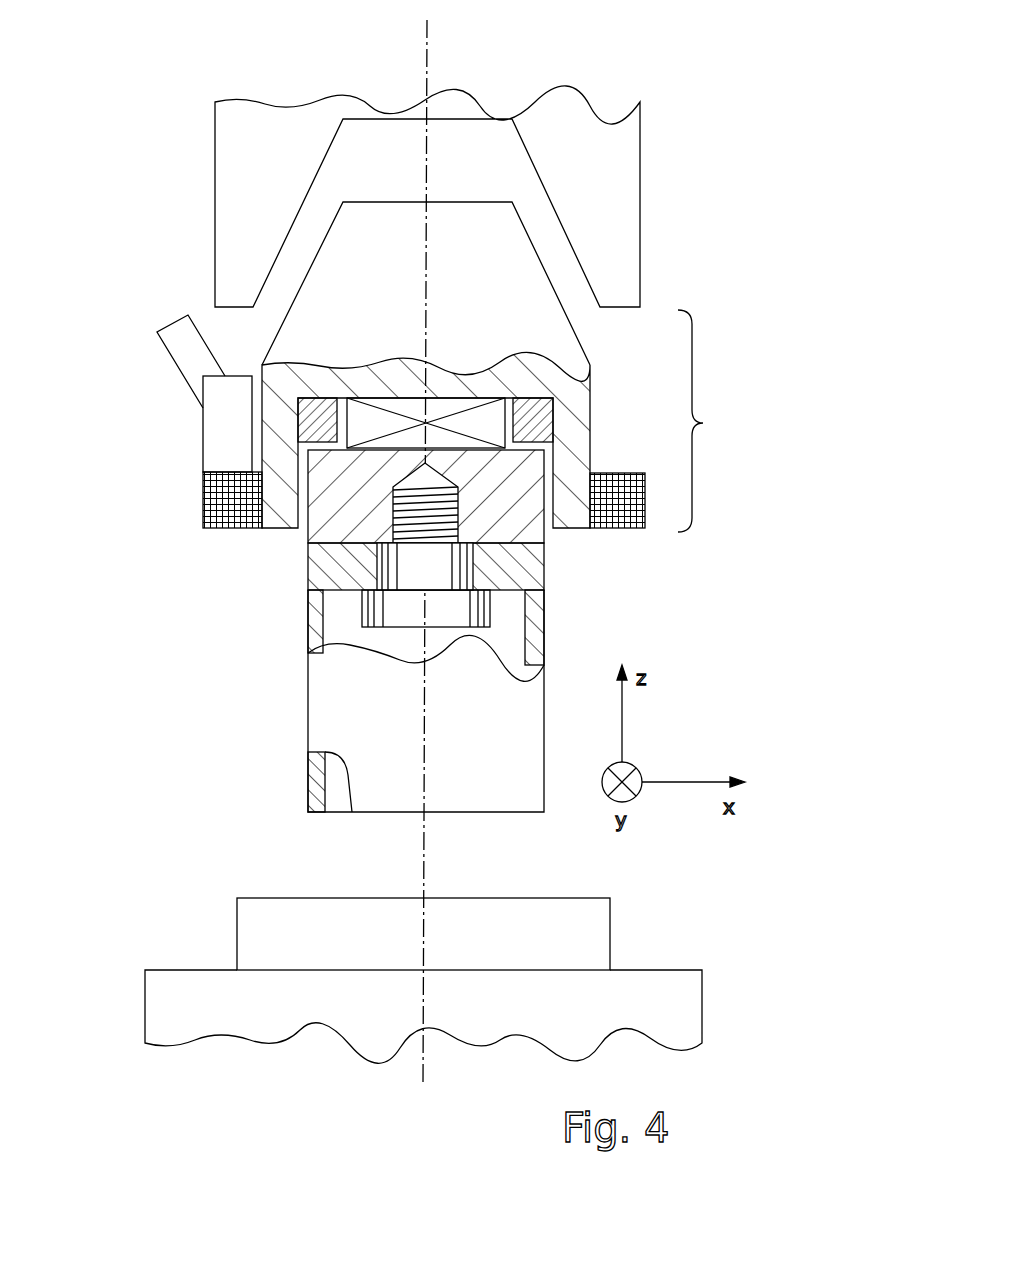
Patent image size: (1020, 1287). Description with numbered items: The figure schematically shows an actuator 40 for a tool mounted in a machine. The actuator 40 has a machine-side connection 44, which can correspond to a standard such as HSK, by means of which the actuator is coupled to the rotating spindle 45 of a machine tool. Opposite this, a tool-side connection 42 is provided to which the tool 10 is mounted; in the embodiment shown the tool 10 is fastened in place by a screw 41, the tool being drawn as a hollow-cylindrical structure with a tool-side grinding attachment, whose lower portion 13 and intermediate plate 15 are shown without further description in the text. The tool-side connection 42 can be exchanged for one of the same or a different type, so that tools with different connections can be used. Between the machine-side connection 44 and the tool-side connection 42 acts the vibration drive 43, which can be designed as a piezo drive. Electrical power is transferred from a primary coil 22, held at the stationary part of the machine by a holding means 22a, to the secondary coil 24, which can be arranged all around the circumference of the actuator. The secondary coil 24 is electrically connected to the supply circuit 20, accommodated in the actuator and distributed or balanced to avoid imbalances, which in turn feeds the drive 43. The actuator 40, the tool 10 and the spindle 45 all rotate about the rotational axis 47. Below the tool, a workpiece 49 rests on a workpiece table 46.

The tool 10 is at (265, 692).
The housing bottom section 13 is at (317, 812).
The plate 15 is at (322, 565).
The supply circuit 20 is at (487, 417).
The primary coil 22 is at (215, 443).
The holding means 22a is at (187, 357).
The secondary coil 24 is at (205, 508).
The actuator 40 is at (710, 421).
The screw 41 is at (363, 604).
The tool-side connection 42 is at (527, 478).
The vibration drive 43 is at (553, 399).
The machine-side connection 44 is at (548, 343).
The spindle 45 is at (630, 238).
The workpiece table 46 is at (690, 1000).
The rotational axis 47 is at (427, 60).
The workpiece 49 is at (597, 927).